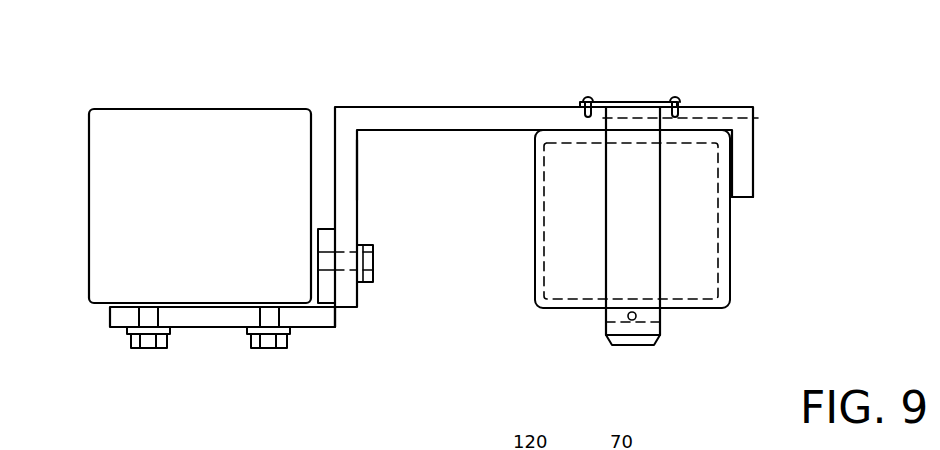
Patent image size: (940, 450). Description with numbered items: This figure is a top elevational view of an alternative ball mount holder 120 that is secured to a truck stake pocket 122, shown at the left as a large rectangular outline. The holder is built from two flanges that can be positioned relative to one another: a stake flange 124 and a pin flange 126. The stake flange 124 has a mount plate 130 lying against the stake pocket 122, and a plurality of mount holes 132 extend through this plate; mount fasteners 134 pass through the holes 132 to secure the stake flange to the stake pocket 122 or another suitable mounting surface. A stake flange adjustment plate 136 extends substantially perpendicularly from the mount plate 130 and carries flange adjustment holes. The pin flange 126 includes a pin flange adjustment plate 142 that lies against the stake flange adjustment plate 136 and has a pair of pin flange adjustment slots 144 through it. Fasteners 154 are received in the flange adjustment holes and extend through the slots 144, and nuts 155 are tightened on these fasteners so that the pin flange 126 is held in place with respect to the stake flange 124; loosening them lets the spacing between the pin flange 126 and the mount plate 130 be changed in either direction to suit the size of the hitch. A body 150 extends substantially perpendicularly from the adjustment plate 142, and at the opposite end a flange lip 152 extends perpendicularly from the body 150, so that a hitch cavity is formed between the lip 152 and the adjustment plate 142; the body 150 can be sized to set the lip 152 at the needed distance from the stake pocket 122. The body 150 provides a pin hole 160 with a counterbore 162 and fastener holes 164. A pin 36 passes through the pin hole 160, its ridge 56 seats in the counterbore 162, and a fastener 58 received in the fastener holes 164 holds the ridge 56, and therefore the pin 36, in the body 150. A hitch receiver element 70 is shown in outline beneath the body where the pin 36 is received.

The pin 36 is at (588, 208).
The ridge 56 is at (636, 102).
The fastener 58 is at (596, 97).
The housing 70 is at (685, 310).
The ball mount holder 120 is at (498, 88).
The truck stake pocket 122 is at (213, 216).
The stake flange 124 is at (306, 361).
The pin flange 126 is at (432, 140).
The mount plate 130 is at (195, 327).
The mount holes 132 is at (110, 314).
The mount fasteners 134 is at (148, 348).
The stake flange adjustment plate 136 is at (318, 229).
The pin flange adjustment plate 142 is at (350, 147).
The pin flange adjustment slots 144 is at (322, 280).
The body 150 is at (418, 107).
The flange lip 152 is at (743, 197).
The fasteners 154 is at (338, 315).
The nuts 155 is at (373, 250).
The pin hole 160 is at (758, 118).
The counterbore 162 is at (683, 108).
The fastener holes 164 is at (584, 118).